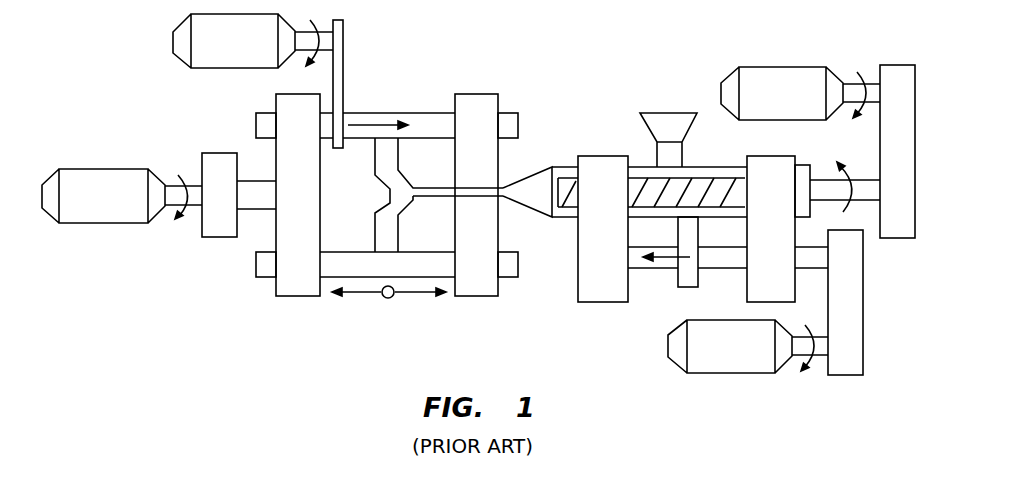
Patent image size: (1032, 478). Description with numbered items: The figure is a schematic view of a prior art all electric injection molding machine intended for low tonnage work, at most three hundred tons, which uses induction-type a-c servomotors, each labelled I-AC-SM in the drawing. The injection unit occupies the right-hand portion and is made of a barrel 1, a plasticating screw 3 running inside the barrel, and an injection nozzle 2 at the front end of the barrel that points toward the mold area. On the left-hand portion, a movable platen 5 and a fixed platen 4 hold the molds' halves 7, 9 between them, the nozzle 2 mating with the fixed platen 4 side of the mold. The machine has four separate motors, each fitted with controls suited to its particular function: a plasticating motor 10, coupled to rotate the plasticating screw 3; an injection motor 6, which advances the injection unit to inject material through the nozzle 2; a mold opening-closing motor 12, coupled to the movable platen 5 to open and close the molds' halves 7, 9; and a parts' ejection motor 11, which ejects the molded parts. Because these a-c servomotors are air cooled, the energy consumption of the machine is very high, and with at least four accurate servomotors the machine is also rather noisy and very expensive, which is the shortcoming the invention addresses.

The barrel 1 is at (645, 167).
The injection nozzle 2 is at (533, 172).
The plasticating screw 3 is at (693, 180).
The fixed platen 4 is at (487, 290).
The movable platen 5 is at (300, 276).
The injection motor 6 is at (735, 363).
The mold half 7 is at (335, 227).
The mold half 9 is at (430, 232).
The plasticating motor 10 is at (797, 70).
The parts' ejection motor 11 is at (238, 60).
The mold opening-closing motor 12 is at (94, 208).